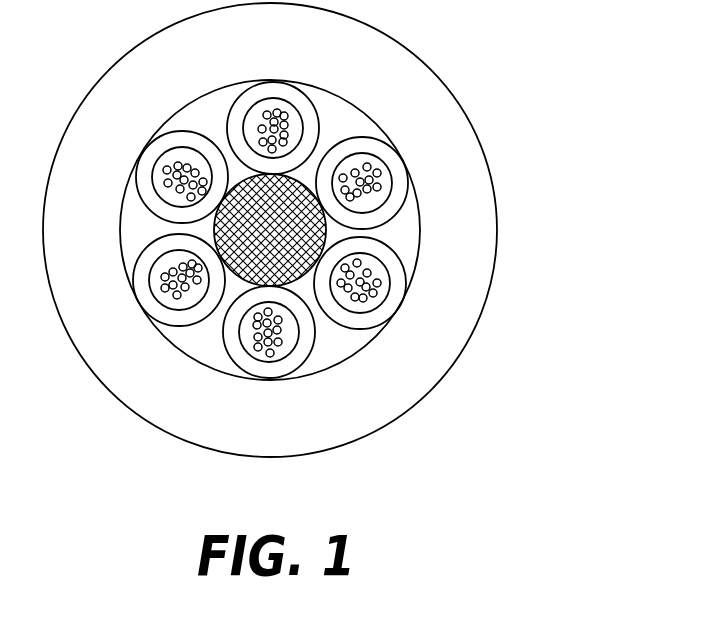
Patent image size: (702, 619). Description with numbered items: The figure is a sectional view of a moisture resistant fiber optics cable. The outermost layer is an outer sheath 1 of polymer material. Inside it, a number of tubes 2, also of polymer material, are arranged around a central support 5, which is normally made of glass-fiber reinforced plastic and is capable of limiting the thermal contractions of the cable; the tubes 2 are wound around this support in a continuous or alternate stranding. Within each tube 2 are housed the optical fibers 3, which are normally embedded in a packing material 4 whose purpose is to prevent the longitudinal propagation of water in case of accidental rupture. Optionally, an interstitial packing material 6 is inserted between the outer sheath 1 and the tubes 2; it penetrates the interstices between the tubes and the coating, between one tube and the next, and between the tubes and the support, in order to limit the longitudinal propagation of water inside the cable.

The outer sheath 1 is at (423, 117).
The tubes 2 is at (312, 113).
The optical fibers 3 is at (377, 283).
The packing material 4 is at (367, 262).
The central support 5 is at (293, 217).
The interstitial packing material 6 is at (328, 338).